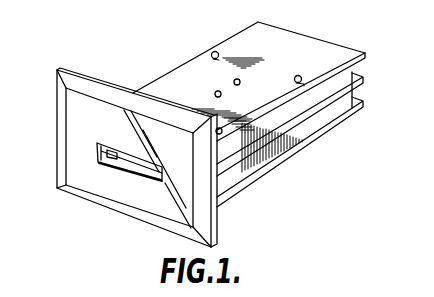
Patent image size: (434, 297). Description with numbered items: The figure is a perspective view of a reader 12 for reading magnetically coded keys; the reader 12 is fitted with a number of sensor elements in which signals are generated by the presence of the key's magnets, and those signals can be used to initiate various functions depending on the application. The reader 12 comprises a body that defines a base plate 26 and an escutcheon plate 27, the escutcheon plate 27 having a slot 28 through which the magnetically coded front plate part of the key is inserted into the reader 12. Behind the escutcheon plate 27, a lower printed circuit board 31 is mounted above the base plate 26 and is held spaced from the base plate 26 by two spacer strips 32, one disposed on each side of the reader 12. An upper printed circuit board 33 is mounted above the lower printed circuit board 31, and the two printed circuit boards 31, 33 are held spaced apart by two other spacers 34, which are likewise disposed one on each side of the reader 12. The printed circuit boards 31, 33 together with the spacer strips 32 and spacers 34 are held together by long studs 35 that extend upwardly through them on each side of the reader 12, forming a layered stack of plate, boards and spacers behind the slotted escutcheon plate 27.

The reader 12 is at (173, 63).
The base plate 26 is at (307, 143).
The escutcheon plate 27 is at (80, 182).
The slot 28 is at (100, 153).
The lower printed circuit board 31 is at (364, 83).
The spacer strips 32 is at (318, 120).
The upper printed circuit board 33 is at (330, 50).
The spacers 34 is at (351, 74).
The studs 35 is at (213, 51).